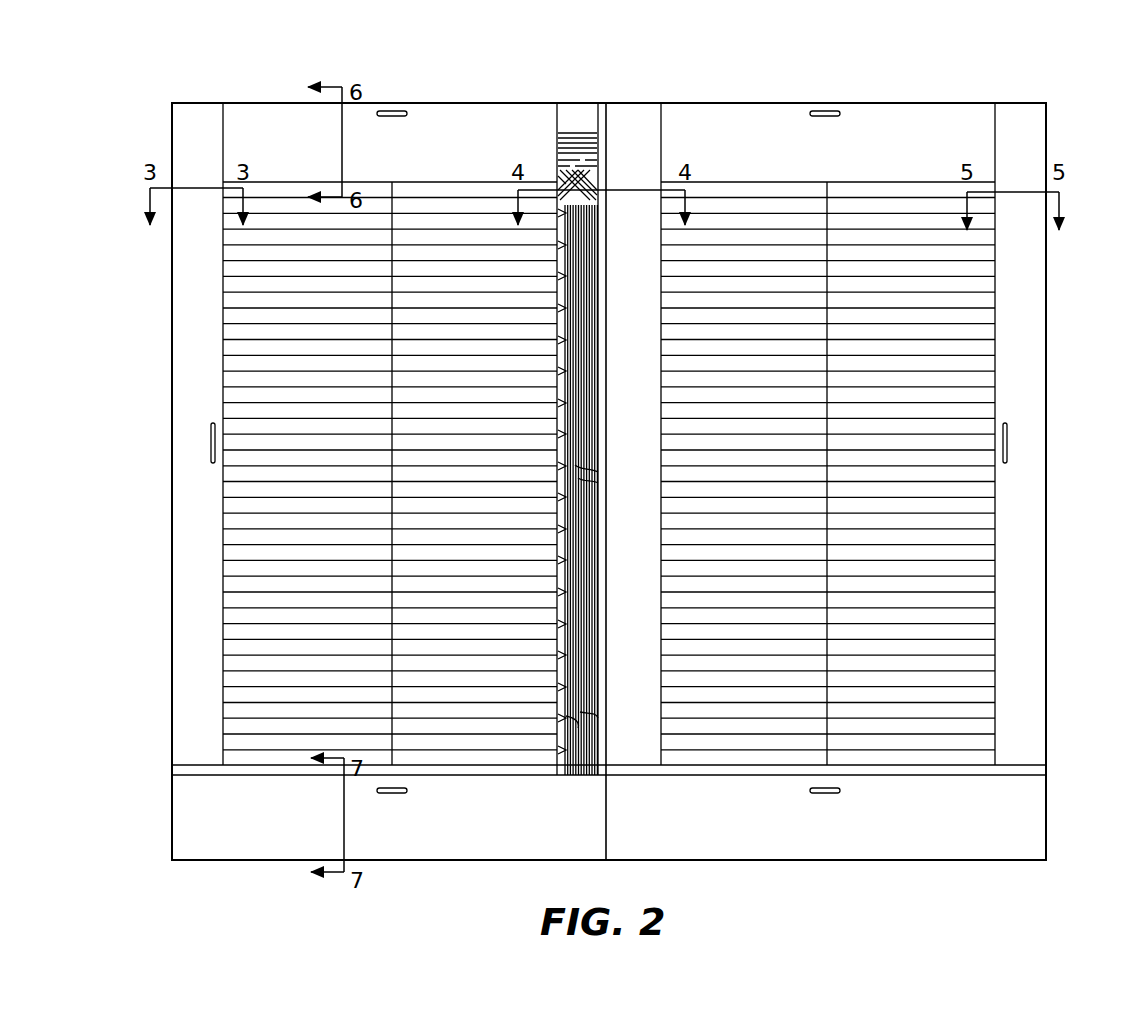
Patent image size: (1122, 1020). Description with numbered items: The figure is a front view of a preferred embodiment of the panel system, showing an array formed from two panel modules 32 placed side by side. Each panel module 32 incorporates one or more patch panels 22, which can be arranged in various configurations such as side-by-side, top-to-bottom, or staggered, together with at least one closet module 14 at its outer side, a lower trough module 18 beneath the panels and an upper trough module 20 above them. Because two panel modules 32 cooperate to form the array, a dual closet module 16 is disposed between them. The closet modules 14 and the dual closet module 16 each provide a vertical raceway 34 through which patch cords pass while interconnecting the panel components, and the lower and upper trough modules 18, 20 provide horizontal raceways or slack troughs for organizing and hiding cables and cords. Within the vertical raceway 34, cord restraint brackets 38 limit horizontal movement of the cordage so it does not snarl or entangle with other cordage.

The closet module 14 is at (193, 327).
The dual closet module 16 is at (640, 125).
The lower trough module 18 is at (258, 825).
The upper trough module 20 is at (525, 132).
The patch panel 22 is at (435, 473).
The panel module 32 is at (443, 174).
The vertical raceway 34 is at (576, 120).
The cord restraint bracket 38 is at (592, 517).